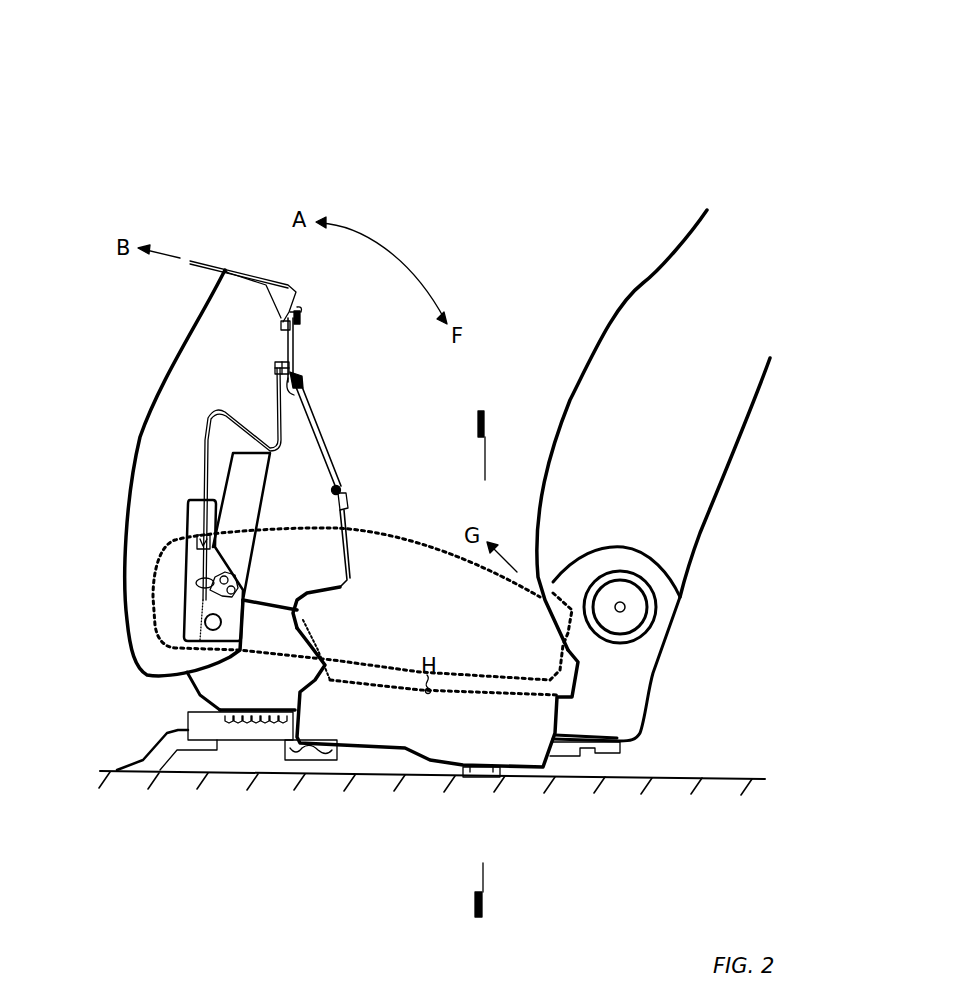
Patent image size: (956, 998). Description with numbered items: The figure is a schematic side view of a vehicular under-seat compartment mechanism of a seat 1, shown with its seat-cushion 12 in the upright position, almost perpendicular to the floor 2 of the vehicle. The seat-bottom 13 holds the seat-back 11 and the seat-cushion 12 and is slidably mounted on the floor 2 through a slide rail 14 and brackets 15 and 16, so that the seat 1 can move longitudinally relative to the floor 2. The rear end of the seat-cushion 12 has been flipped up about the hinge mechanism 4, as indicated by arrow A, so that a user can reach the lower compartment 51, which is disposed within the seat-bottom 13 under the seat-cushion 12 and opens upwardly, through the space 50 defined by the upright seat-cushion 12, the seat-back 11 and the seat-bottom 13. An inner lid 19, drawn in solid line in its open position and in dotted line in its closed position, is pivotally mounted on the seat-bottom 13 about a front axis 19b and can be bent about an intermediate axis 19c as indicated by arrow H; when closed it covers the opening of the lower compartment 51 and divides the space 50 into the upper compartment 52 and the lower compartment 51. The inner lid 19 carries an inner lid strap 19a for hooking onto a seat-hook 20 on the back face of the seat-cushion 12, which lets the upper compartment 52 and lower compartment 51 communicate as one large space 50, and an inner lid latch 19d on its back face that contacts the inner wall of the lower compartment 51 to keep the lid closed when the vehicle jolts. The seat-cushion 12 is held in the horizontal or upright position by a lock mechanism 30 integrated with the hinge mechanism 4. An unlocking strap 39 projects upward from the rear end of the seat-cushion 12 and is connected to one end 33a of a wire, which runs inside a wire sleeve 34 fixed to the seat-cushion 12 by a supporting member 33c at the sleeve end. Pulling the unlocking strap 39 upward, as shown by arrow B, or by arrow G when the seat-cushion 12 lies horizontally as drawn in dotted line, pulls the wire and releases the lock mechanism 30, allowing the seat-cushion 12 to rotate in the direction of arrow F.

The seat 1 is at (417, 66).
The floor 2 is at (728, 819).
The hinge mechanism 4 is at (466, 423).
The seat-back 11 is at (692, 501).
The seat-cushion 12 is at (180, 363).
The seat-bottom 13 is at (625, 703).
The slide rail 14 is at (584, 768).
The bracket 15 is at (167, 775).
The bracket 16 is at (493, 782).
The inner lid 19 is at (322, 433).
The inner lid strap 19a is at (287, 395).
The front axis 19b is at (303, 612).
The intermediate axis 19c is at (340, 488).
The inner lid latch 19d is at (303, 367).
The seat-hook 20 is at (300, 313).
The lock mechanism 30 is at (176, 518).
The end of the wire 33a is at (274, 326).
The supporting member 33c is at (270, 366).
The wire sleeve 34 is at (197, 453).
The unlocking strap 39 is at (208, 262).
The space 50 is at (386, 698).
The lower compartment 51 is at (468, 743).
The upper compartment 52 is at (492, 670).